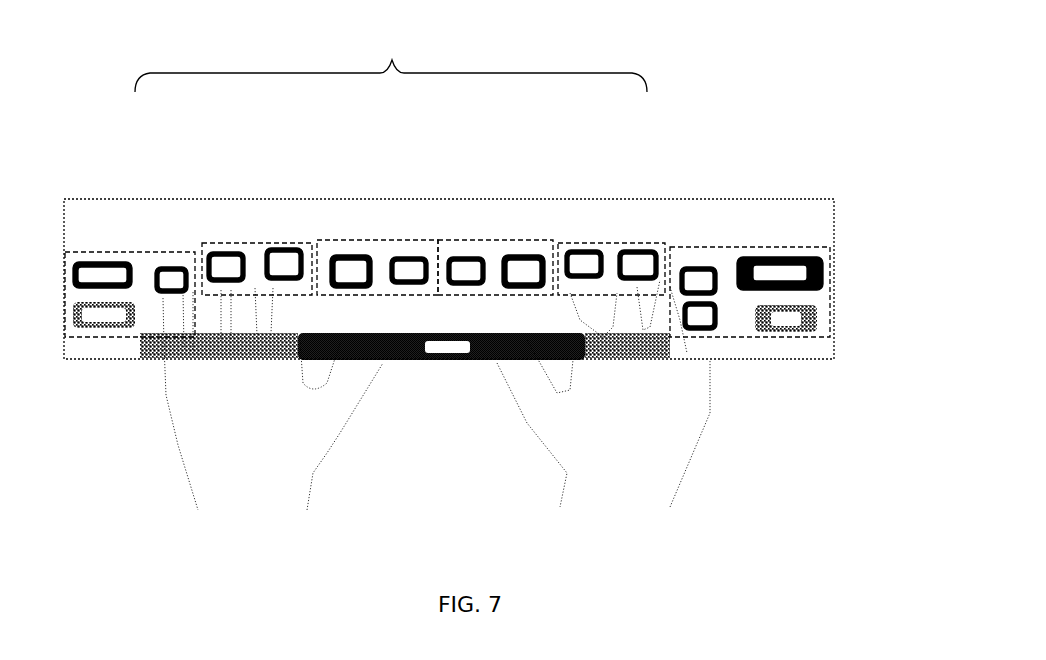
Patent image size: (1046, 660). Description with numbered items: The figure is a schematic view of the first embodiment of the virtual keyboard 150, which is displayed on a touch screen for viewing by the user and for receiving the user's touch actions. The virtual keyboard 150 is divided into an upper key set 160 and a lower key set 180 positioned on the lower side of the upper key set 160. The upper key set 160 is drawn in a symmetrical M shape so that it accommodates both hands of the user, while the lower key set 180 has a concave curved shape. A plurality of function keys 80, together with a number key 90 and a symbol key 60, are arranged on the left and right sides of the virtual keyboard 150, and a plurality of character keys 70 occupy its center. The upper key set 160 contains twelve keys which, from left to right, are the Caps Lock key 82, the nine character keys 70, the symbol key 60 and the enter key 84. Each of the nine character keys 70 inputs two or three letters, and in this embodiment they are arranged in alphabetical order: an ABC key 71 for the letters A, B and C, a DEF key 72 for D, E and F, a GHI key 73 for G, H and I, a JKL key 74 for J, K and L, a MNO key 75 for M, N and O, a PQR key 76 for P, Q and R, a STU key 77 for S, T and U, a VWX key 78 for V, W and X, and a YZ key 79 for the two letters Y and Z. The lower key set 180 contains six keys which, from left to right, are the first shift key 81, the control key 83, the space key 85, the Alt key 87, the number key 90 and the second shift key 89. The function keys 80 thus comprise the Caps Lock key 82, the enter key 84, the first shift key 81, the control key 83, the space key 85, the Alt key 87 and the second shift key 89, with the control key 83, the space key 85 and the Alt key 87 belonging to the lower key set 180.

The virtual keyboard 150 is at (838, 188).
The upper key set 160 is at (147, 243).
The character keys 70 is at (400, 162).
The ABC key 71 is at (163, 268).
The DEF key 72 is at (229, 252).
The GHI key 73 is at (287, 249).
The JKL key 74 is at (352, 255).
The MNO key 75 is at (410, 257).
The PQR key 76 is at (466, 257).
The STU key 77 is at (510, 255).
The VWX key 78 is at (584, 250).
The YZ key 79 is at (637, 250).
The symbol key 60 is at (698, 267).
The function keys 80 is at (78, 266).
The first shift key 81 is at (100, 316).
The Caps Lock key 82 is at (98, 260).
The control key 83 is at (262, 346).
The enter key 84 is at (782, 257).
The space key 85 is at (382, 355).
The Alt key 87 is at (642, 348).
The second shift key 89 is at (792, 330).
The number key 90 is at (718, 328).
The lower key set 180 is at (468, 352).